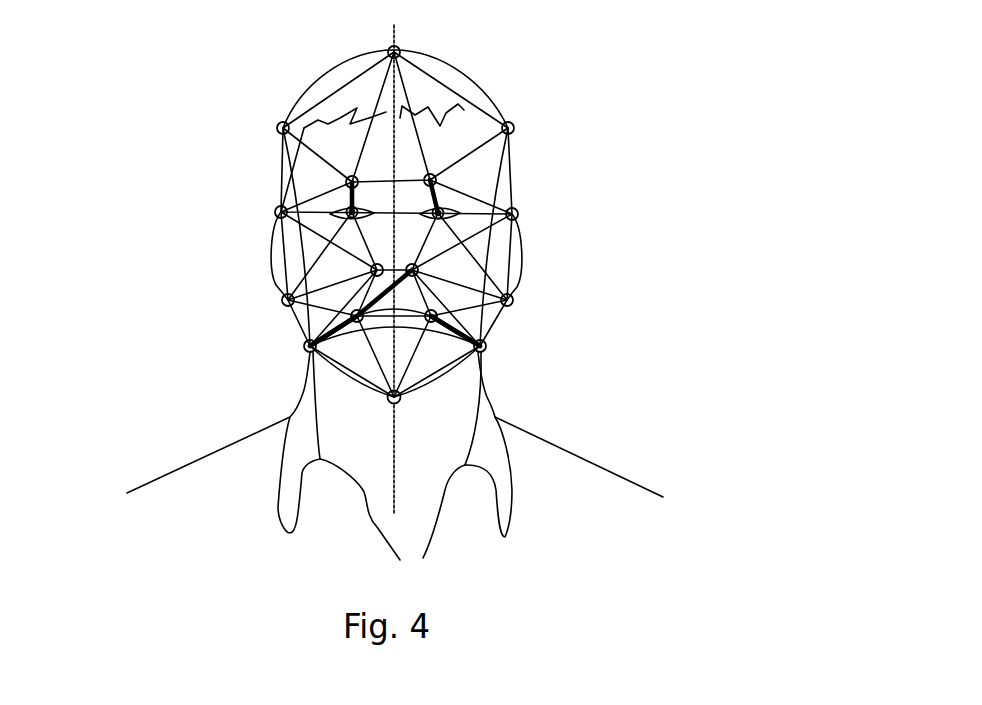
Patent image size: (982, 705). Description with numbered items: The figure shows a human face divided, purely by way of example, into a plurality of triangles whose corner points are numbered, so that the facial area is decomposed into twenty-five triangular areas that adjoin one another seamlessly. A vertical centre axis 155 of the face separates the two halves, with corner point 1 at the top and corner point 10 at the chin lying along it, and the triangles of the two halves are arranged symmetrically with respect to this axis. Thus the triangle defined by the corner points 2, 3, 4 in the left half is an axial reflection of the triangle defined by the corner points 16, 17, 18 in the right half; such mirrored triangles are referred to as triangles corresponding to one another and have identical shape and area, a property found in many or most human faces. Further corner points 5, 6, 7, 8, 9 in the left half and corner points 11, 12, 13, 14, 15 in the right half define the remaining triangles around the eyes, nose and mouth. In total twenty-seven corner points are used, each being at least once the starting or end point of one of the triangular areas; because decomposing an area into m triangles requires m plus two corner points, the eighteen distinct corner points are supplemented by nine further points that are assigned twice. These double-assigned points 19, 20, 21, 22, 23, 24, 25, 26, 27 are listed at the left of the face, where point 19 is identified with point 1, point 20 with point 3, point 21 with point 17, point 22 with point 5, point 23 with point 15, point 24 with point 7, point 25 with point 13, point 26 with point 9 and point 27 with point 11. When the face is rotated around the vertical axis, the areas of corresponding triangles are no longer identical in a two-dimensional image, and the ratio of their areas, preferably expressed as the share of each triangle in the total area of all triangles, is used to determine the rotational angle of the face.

The corner point 1 is at (395, 29).
The corner point 2 is at (272, 129).
The corner point 3 is at (347, 166).
The corner point 4 is at (269, 211).
The corner point 5 is at (338, 200).
The corner point 6 is at (276, 301).
The corner point 7 is at (362, 266).
The corner point 8 is at (296, 367).
The corner point 9 is at (303, 345).
The corner point 10 is at (396, 419).
The corner point 11 is at (488, 349).
The corner point 12 is at (502, 365).
The corner point 13 is at (428, 266).
The corner point 14 is at (527, 303).
The corner point 15 is at (455, 200).
The corner point 16 is at (534, 214).
The corner point 17 is at (440, 166).
The corner point 18 is at (527, 121).
The double-assigned corner point 19 is at (112, 93).
The double-assigned corner point 20 is at (112, 121).
The double-assigned corner point 21 is at (119, 149).
The double-assigned corner point 22 is at (112, 177).
The double-assigned corner point 23 is at (119, 205).
The double-assigned corner point 24 is at (112, 233).
The double-assigned corner point 25 is at (119, 261).
The double-assigned corner point 26 is at (112, 289).
The double-assigned corner point 27 is at (119, 317).
The vertical centre axis 155 is at (394, 468).